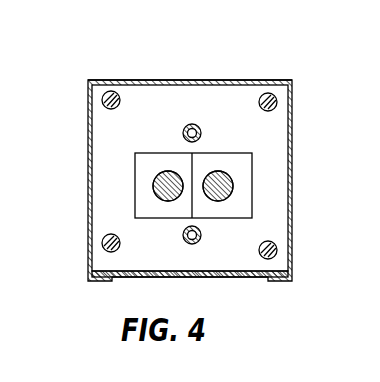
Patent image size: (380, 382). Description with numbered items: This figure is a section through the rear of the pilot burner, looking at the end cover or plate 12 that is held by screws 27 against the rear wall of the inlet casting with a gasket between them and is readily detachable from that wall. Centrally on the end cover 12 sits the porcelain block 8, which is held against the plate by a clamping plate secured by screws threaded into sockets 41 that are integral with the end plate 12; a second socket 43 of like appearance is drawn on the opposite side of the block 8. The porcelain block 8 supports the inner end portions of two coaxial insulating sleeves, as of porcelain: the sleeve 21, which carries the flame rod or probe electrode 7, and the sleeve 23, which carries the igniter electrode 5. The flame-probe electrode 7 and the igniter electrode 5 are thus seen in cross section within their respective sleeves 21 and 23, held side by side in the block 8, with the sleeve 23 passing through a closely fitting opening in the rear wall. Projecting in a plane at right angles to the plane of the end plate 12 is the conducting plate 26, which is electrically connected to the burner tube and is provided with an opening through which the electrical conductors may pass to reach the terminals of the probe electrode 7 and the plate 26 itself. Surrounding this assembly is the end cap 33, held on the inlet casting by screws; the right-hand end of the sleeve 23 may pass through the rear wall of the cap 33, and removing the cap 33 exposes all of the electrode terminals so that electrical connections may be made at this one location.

The igniter electrode 5 is at (169, 171).
The flame rod or probe electrode 7 is at (233, 180).
The porcelain block 8 is at (260, 165).
The end cover or plate 12 is at (281, 127).
The insulating sleeve 21 is at (232, 195).
The insulating sleeve 23 is at (154, 192).
The conducting plate 26 is at (243, 277).
The screws 27 is at (103, 99).
The end cap 33 is at (217, 80).
The sockets 41 is at (201, 131).
The opening 43 is at (201, 237).